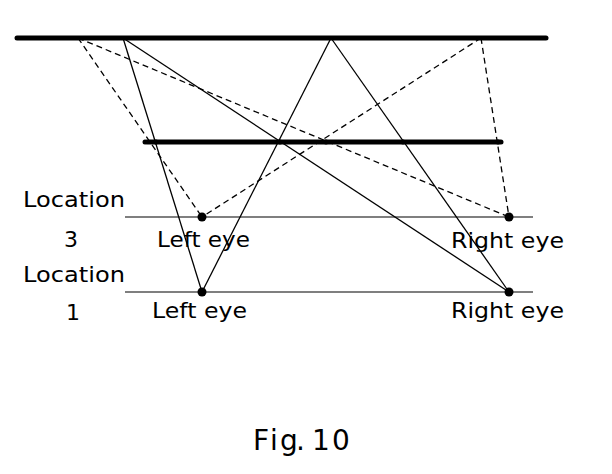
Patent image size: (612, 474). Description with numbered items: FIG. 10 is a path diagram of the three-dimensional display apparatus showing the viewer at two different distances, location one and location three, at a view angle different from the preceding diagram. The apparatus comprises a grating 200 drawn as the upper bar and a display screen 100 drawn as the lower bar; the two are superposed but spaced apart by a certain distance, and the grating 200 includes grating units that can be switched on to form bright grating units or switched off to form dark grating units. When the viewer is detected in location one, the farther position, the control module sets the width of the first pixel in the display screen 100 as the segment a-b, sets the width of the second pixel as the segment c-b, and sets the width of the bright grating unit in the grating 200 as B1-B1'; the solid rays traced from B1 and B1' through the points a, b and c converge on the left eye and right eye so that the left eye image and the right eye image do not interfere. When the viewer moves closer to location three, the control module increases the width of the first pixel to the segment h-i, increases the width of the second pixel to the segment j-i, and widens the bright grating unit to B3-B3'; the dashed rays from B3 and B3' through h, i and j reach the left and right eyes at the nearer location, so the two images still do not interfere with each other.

The display screen 100 is at (474, 142).
The grating 200 is at (521, 38).
The first end of bright grating unit at location 1 B1 is at (310, 152).
The second end of bright grating unit at location 1 B1' is at (355, 152).
The first end of bright grating unit at location 3 B3 is at (286, 115).
The second end of bright grating unit at location 3 B3' is at (355, 115).
The first pixel boundary point at location 1 a is at (159, 133).
The shared pixel boundary point at location 1 b is at (278, 133).
The second pixel boundary point at location 1 c is at (404, 133).
The first pixel boundary point at location 3 h is at (140, 133).
The shared pixel boundary point at location 3 i is at (323, 133).
The second pixel boundary point at location 3 j is at (503, 133).